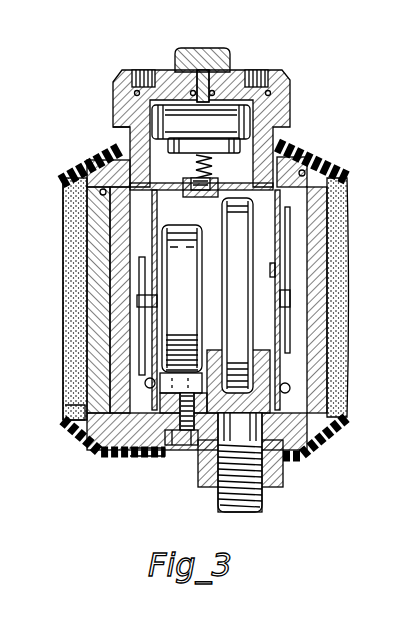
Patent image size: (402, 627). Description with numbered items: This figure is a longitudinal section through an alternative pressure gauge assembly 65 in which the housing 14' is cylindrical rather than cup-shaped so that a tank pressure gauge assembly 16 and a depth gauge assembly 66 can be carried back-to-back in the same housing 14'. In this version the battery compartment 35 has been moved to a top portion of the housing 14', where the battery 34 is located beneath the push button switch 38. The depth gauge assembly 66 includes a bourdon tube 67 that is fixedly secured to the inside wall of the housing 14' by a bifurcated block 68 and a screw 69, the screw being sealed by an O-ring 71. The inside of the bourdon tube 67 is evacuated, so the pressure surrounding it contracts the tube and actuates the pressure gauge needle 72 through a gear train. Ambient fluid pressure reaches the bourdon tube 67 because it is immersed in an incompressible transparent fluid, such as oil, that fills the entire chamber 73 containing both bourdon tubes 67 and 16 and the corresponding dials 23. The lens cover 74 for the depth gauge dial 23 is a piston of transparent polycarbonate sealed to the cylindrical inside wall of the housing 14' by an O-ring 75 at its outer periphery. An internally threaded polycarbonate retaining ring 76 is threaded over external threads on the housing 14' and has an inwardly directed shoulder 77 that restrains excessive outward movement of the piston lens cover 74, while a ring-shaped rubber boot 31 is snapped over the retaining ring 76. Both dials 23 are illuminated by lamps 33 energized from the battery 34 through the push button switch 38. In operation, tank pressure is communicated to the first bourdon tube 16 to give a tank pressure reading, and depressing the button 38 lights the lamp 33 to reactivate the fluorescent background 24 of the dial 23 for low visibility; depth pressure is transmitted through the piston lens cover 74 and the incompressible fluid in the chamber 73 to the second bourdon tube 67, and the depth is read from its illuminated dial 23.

The push button switch 38 is at (200, 48).
The pressure gauge assembly 65 is at (302, 104).
The battery 34 is at (210, 133).
The battery compartment 35 is at (243, 160).
The housing 14' is at (123, 298).
The retaining ring 76 is at (82, 148).
The O-ring 75 is at (62, 197).
The dial 23 is at (142, 215).
The depth gauge assembly 66 is at (140, 247).
The lens cover 74 is at (120, 285).
The pressure gauge needle 72 is at (130, 307).
The lamp 33 is at (145, 383).
The shoulder 77 is at (73, 423).
The rubber boot 31 is at (87, 453).
The O-ring 71 is at (190, 445).
The screw 69 is at (192, 460).
The chamber 73 is at (209, 222).
The bourdon tube 67 is at (192, 284).
The bifurcated block 68 is at (200, 357).
The tank pressure gauge assembly 16 is at (248, 262).
The fluorescent background 24 is at (282, 367).